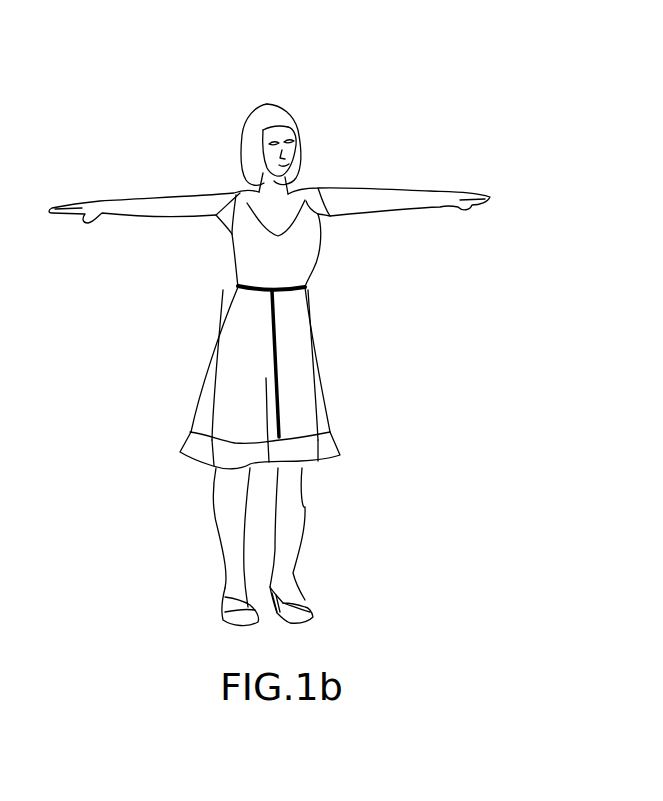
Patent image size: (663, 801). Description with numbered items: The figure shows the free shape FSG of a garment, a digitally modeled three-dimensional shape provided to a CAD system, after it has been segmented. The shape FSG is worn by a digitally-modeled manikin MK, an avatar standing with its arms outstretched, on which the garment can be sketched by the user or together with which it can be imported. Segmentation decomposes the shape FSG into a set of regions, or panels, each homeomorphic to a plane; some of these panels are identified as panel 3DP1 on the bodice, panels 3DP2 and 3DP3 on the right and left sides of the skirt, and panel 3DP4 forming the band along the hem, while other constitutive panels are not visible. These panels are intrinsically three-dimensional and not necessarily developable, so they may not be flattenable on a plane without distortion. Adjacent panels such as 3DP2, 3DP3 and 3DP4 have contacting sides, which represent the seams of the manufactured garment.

The digitally-modeled 3D manikin MK is at (142, 193).
The free 3D shape FSG is at (326, 249).
The panel 3DP1 is at (304, 190).
The panel 3DP2 is at (300, 356).
The panel 3DP3 is at (222, 333).
The panel 3DP4 is at (328, 447).